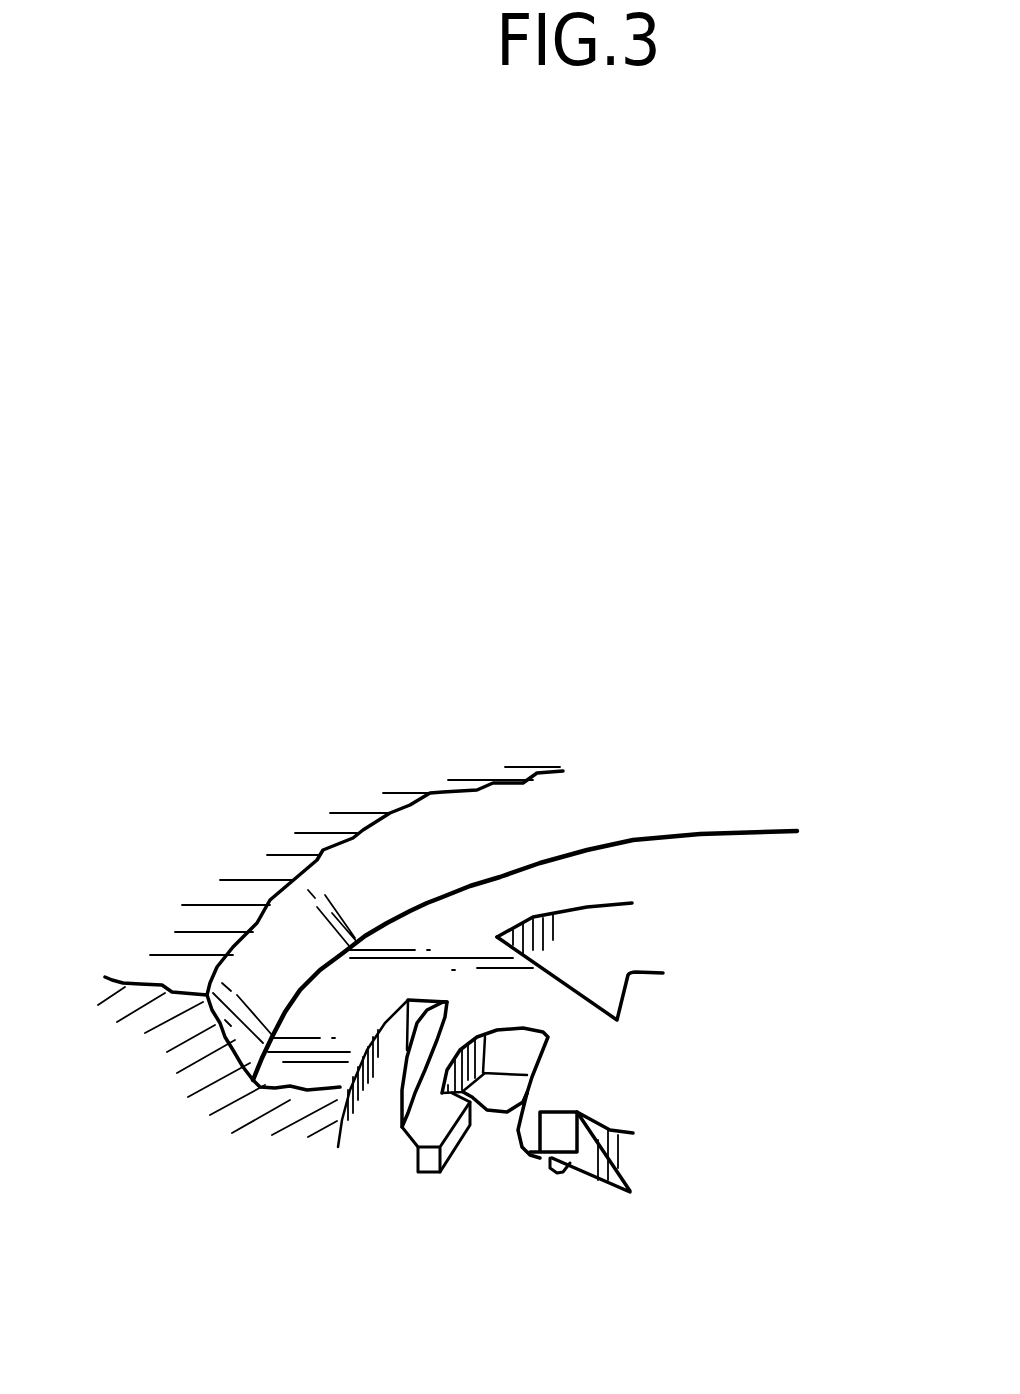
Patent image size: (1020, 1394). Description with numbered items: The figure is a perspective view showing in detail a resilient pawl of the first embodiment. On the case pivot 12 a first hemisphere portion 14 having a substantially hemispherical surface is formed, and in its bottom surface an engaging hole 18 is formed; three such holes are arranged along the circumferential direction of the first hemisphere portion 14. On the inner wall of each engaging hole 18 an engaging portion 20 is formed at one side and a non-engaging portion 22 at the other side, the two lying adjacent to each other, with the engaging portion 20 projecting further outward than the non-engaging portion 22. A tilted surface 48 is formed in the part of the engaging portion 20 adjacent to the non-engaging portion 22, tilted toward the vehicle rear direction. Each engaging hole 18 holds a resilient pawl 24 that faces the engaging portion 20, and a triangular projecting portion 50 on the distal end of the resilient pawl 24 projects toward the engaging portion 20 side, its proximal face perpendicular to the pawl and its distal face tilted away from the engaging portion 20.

The case pivot 12 is at (542, 513).
The first hemisphere portion 14 is at (273, 963).
The engaging hole 18 is at (597, 933).
The engaging portion 20 is at (530, 1125).
The non-engaging portion 22 is at (610, 1130).
The resilient pawl 24 is at (392, 1145).
The tilted surface 48 is at (607, 1130).
The projecting portion 50 is at (543, 1097).